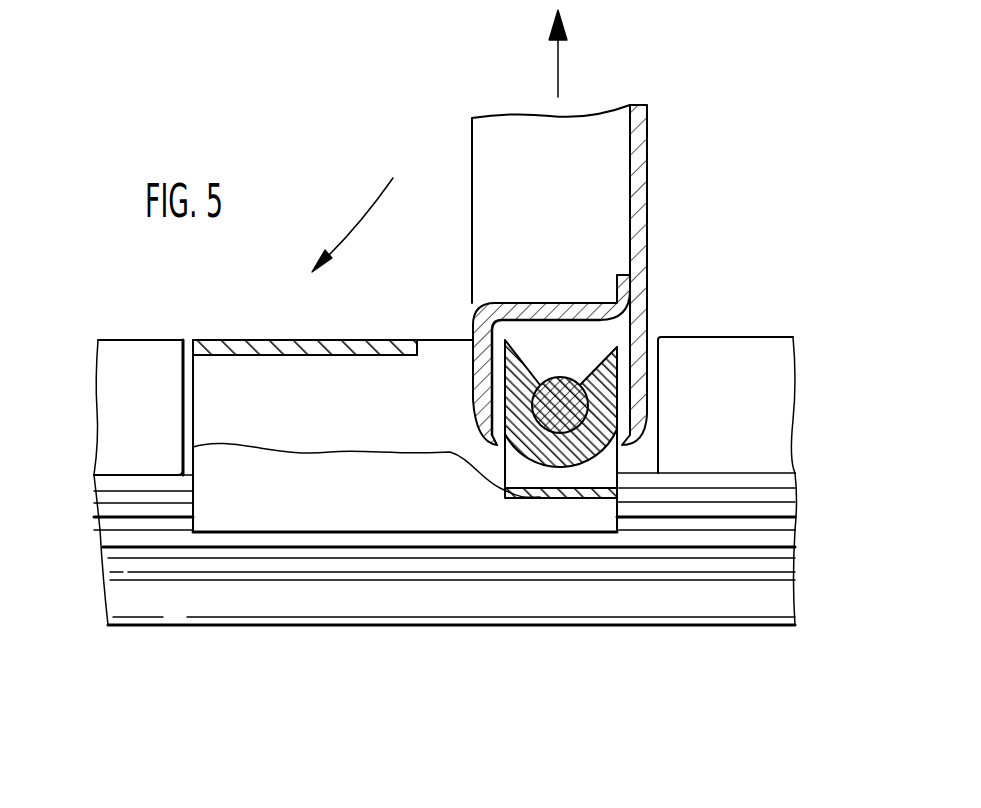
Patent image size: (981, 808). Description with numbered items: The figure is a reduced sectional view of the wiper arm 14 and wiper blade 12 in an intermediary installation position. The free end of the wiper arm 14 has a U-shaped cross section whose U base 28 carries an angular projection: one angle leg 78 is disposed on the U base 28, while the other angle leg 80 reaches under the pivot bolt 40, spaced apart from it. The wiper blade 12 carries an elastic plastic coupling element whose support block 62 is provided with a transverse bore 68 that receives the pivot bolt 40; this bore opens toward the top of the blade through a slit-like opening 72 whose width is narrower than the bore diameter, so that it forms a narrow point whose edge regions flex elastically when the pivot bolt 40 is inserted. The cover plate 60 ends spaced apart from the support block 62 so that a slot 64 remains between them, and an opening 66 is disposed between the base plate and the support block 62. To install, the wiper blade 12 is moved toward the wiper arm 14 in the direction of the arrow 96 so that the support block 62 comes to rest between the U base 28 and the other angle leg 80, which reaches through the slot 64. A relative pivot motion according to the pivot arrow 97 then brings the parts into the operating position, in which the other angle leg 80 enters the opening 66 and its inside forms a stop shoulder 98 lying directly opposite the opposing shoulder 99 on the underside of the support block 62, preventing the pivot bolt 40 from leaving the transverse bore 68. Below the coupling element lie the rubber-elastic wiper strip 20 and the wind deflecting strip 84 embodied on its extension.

The wiper blade 12 is at (125, 490).
The wiper arm 14 is at (609, 275).
The wiper strip 20 is at (315, 558).
The U base 28 is at (657, 160).
The pivot bolt 40 is at (583, 415).
The cover plate 60 is at (268, 345).
The support block 62 is at (612, 390).
The slot 64 is at (438, 352).
The opening 66 is at (606, 502).
The transverse bore 68 is at (405, 409).
The slit-like opening 72 is at (570, 368).
The one angle leg 78 is at (545, 303).
The other angle leg 80 is at (558, 344).
The wind deflecting strip 84 is at (132, 352).
The arrow 96 is at (556, 76).
The pivot arrow 97 is at (377, 192).
The stop shoulder 98 is at (495, 372).
The opposing shoulder 99 is at (560, 473).